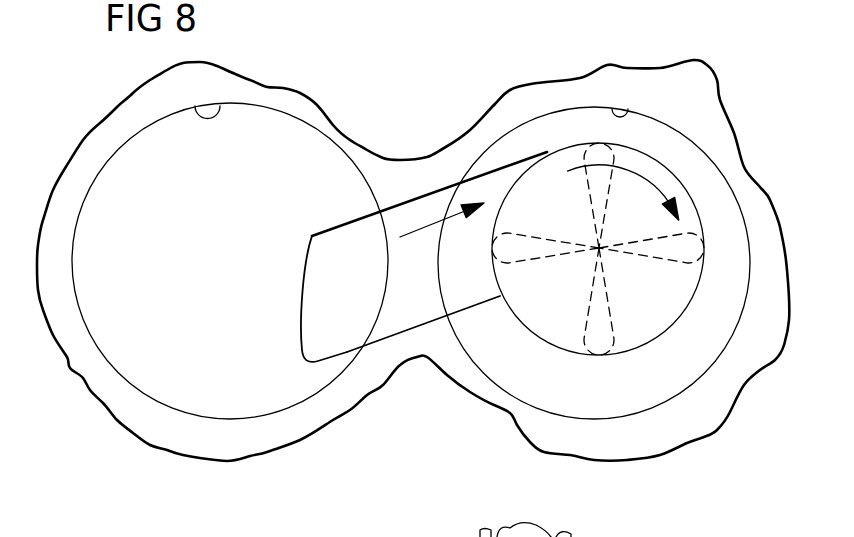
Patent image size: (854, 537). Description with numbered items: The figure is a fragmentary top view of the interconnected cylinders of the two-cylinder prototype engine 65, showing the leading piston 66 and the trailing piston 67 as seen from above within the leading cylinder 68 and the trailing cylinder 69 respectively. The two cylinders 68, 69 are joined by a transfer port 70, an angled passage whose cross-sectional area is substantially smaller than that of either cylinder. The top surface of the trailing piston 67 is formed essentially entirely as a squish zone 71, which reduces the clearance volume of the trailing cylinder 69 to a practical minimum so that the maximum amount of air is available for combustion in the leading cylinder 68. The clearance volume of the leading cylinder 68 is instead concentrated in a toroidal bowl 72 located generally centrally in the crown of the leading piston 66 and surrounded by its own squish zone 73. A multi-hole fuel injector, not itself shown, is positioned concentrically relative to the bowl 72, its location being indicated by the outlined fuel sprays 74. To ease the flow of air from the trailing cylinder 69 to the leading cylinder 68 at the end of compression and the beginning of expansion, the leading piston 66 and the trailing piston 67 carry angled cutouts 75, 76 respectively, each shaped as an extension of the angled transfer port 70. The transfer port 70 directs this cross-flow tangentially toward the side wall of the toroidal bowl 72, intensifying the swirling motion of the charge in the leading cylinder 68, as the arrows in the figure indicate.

The two-cylinder prototype engine 65 is at (683, 102).
The leading piston 66 is at (564, 130).
The trailing piston 67 is at (272, 145).
The leading cylinder 68 is at (612, 108).
The trailing cylinder 69 is at (218, 110).
The transfer port 70 is at (422, 210).
The squish zone 71 is at (244, 279).
The toroidal bowl 72 is at (561, 307).
The squish zone 73 is at (613, 396).
The fuel sprays 74 is at (686, 228).
The angled cutout 75 is at (495, 188).
The angled cutout 76 is at (350, 258).